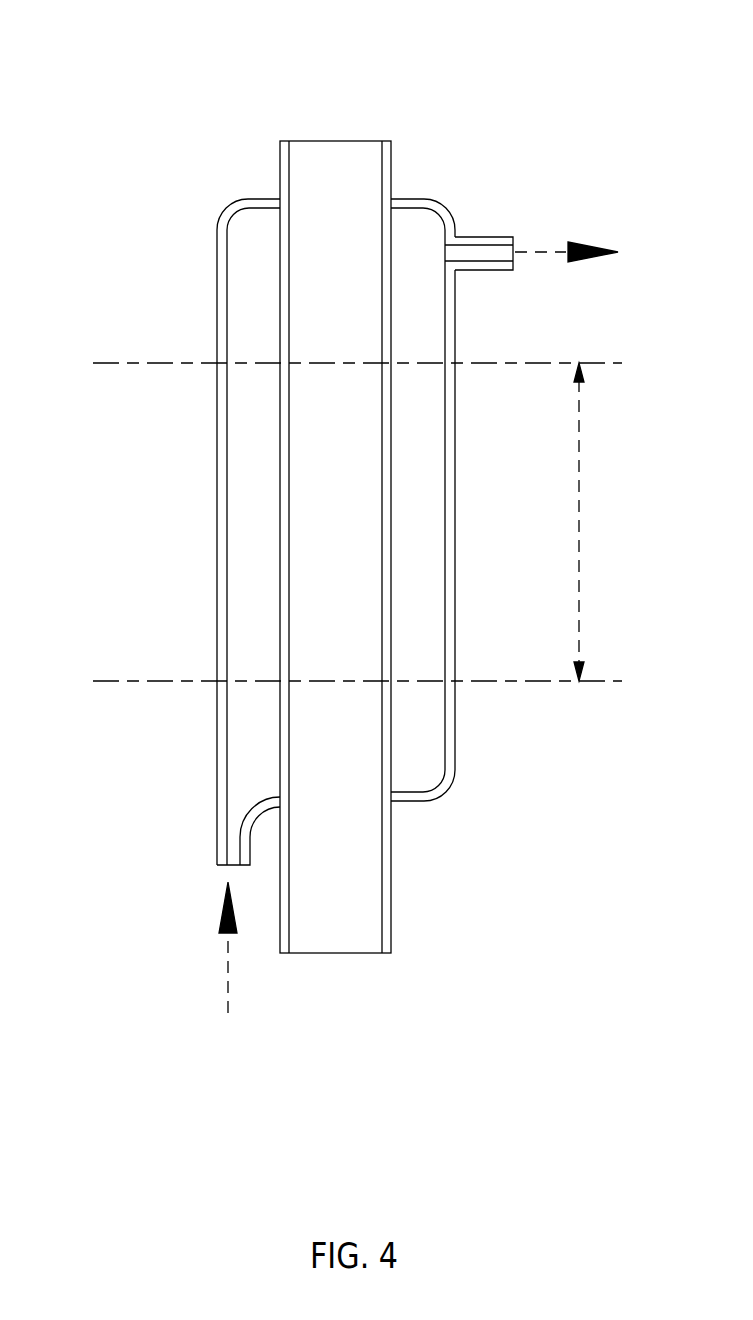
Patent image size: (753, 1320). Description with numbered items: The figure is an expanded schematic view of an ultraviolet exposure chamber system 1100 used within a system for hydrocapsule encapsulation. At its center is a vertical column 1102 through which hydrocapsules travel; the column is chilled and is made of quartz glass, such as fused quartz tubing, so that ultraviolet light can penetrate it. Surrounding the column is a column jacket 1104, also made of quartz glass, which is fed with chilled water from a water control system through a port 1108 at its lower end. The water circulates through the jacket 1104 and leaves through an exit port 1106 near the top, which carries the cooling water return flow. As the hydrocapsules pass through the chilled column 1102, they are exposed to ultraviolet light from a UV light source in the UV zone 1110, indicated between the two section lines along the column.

The ultraviolet exposure chamber system 1100 is at (138, 42).
The column 1102 is at (307, 140).
The column jacket 1104 is at (228, 213).
The exit port 1106 is at (497, 237).
The port 1108 is at (220, 866).
The UV zone 1110 is at (579, 513).